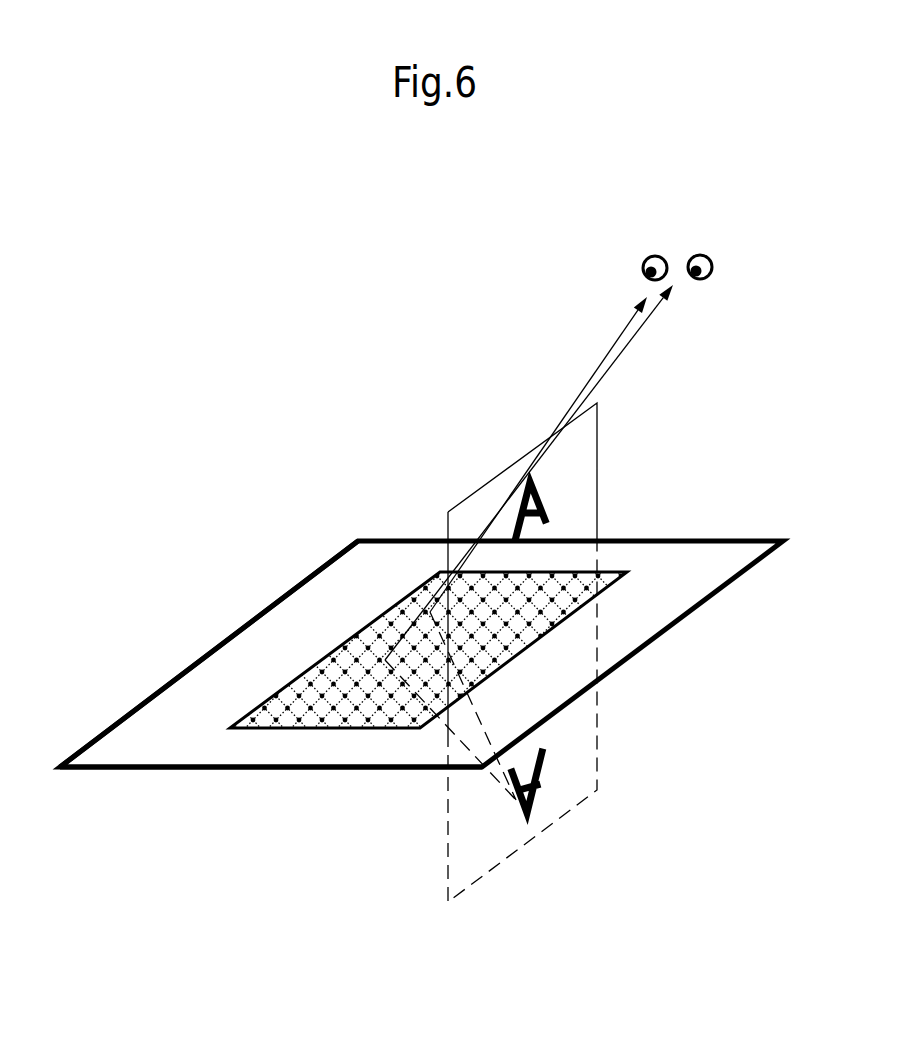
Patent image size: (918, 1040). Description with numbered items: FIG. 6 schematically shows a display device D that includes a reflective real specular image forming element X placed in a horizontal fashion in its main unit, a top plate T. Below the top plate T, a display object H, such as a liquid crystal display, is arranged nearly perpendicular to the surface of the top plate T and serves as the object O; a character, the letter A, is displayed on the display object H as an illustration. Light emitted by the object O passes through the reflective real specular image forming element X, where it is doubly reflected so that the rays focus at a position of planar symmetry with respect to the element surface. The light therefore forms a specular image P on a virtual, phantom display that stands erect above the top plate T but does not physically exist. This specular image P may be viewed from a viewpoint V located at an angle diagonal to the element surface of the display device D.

The display device D is at (204, 606).
The top plate T is at (141, 724).
The reflective real specular image forming element X is at (360, 589).
The viewpoint V is at (548, 438).
The specular image P is at (567, 495).
The object O is at (570, 773).
The display object H is at (448, 793).